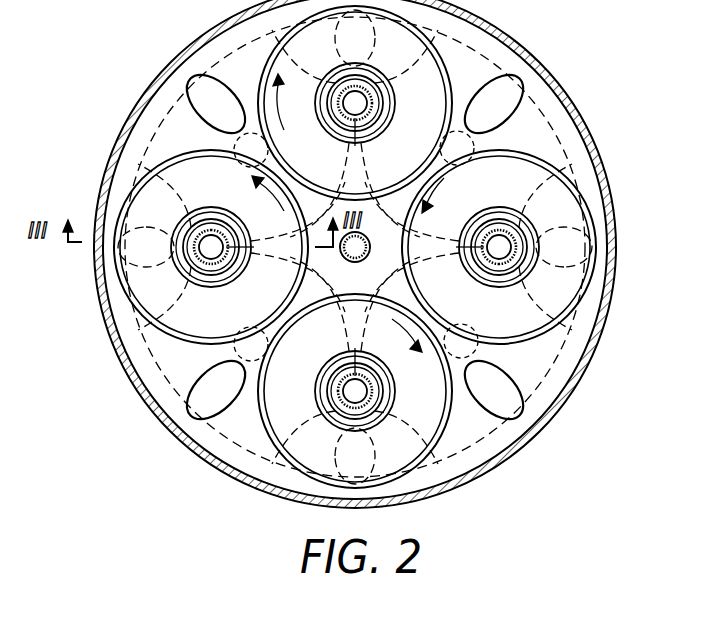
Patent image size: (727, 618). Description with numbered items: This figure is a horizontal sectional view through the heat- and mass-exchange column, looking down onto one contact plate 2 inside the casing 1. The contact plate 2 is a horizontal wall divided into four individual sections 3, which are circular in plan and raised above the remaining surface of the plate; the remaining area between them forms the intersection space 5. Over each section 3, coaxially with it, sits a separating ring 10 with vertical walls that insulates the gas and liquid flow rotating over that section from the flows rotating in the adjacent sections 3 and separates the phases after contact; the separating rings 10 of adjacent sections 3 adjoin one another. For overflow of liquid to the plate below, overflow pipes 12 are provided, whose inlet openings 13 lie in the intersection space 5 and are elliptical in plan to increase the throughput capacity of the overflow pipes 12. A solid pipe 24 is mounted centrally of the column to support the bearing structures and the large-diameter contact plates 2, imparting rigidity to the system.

The casing 1 is at (580, 135).
The contact plate 2 is at (493, 444).
The section 3 is at (562, 288).
The intersection space 5 is at (133, 142).
The separating ring 10 is at (486, 145).
The overflow pipe 12 is at (466, 334).
The inlet opening 13 is at (313, 428).
The solid pipe 24 is at (370, 256).